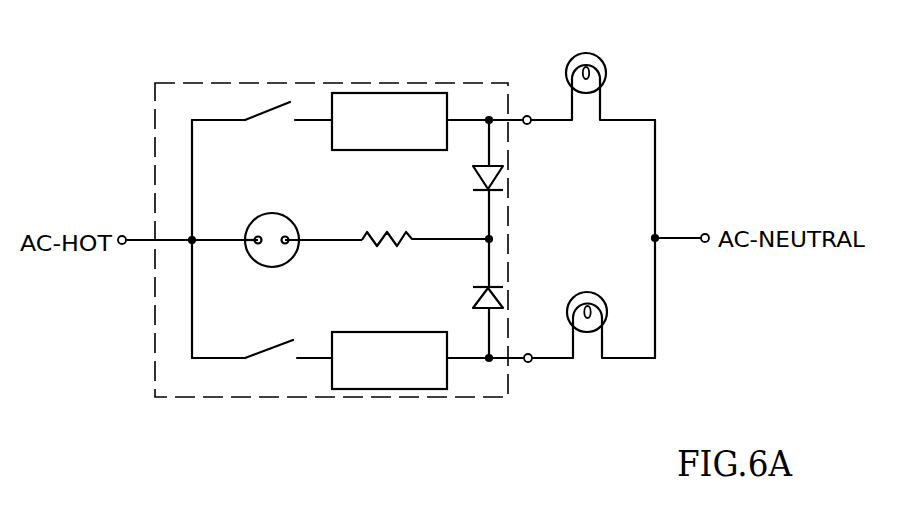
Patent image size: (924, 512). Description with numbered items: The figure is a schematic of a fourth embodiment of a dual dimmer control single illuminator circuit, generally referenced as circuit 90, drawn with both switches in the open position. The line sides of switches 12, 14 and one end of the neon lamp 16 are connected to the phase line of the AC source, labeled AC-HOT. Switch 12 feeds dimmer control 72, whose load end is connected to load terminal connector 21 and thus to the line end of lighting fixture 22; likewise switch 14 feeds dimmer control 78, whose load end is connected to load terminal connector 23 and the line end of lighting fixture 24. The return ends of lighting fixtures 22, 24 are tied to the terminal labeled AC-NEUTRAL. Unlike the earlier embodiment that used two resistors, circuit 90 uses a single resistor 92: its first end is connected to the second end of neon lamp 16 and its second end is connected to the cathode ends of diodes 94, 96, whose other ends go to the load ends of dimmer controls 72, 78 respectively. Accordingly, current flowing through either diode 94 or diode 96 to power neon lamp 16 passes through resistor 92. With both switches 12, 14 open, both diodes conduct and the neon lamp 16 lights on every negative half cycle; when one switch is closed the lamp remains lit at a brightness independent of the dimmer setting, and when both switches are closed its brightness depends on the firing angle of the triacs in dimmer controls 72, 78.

The circuit 90 is at (238, 76).
The switch 12 is at (268, 108).
The switch 14 is at (263, 355).
The neon lamp 16 is at (270, 213).
The dimmer control 72 is at (363, 150).
The dimmer control 78 is at (379, 331).
The resistor 92 is at (387, 232).
The diode 94 is at (502, 181).
The diode 96 is at (503, 297).
The load terminal connector 21 is at (527, 115).
The load terminal connector 23 is at (532, 362).
The lighting fixture 22 is at (607, 77).
The lighting fixture 24 is at (607, 306).